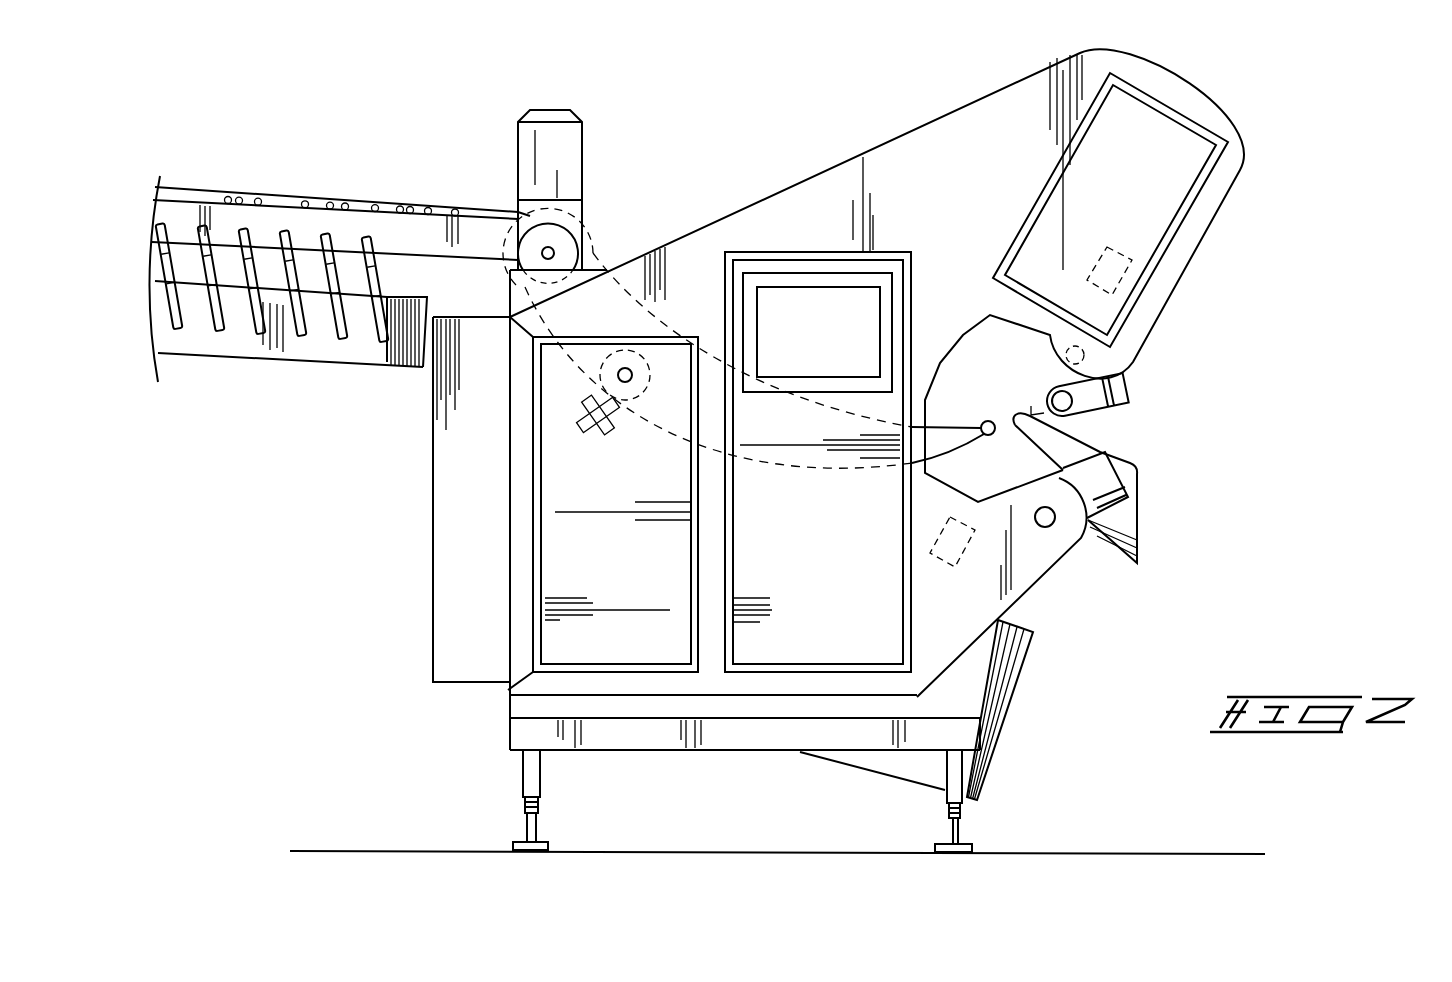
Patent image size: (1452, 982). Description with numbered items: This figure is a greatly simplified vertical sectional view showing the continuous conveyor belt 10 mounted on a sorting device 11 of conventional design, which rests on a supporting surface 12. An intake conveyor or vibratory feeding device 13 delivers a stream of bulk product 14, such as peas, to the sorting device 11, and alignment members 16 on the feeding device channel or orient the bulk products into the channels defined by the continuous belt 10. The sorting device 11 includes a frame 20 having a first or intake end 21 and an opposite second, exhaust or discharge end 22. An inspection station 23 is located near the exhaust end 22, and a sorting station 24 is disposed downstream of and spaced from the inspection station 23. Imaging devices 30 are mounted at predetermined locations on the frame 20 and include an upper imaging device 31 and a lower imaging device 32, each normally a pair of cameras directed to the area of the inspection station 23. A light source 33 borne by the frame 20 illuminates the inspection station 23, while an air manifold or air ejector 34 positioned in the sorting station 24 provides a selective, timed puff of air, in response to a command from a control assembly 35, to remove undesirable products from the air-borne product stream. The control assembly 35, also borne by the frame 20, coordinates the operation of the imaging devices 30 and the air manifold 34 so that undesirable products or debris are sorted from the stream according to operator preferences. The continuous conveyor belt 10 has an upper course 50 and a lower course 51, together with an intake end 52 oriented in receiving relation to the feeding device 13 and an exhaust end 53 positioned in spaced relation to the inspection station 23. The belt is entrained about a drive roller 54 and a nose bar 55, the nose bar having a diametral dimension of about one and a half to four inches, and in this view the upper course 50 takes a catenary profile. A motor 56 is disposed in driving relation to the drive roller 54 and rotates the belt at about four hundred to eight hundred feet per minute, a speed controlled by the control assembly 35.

The continuous conveyor belt 10 is at (680, 332).
The sorting device 11 is at (955, 112).
The supporting surface 12 is at (365, 849).
The intake conveyor or vibratory feeding device 13 is at (207, 200).
The bulk product 14 is at (333, 203).
The alignment members 16 is at (503, 208).
The frame 20 is at (934, 207).
The first or intake end 21 is at (574, 216).
The second, exhaust or discharge end 22 is at (1135, 463).
The inspection station 23 is at (1000, 414).
The sorting station 24 is at (1028, 409).
The imaging devices 30 is at (1122, 246).
The upper imaging device 31 is at (1130, 276).
The lower imaging device 32 is at (933, 563).
The light source 33 is at (1088, 357).
The air manifold or air ejector 34 is at (1133, 392).
The control assembly 35 is at (792, 302).
The upper course 50 is at (812, 408).
The lower course 51 is at (672, 437).
The intake end 52 is at (595, 250).
The exhaust end 53 is at (955, 425).
The drive roller 54 is at (517, 237).
The nose bar 55 is at (990, 438).
The motor 56 is at (582, 152).